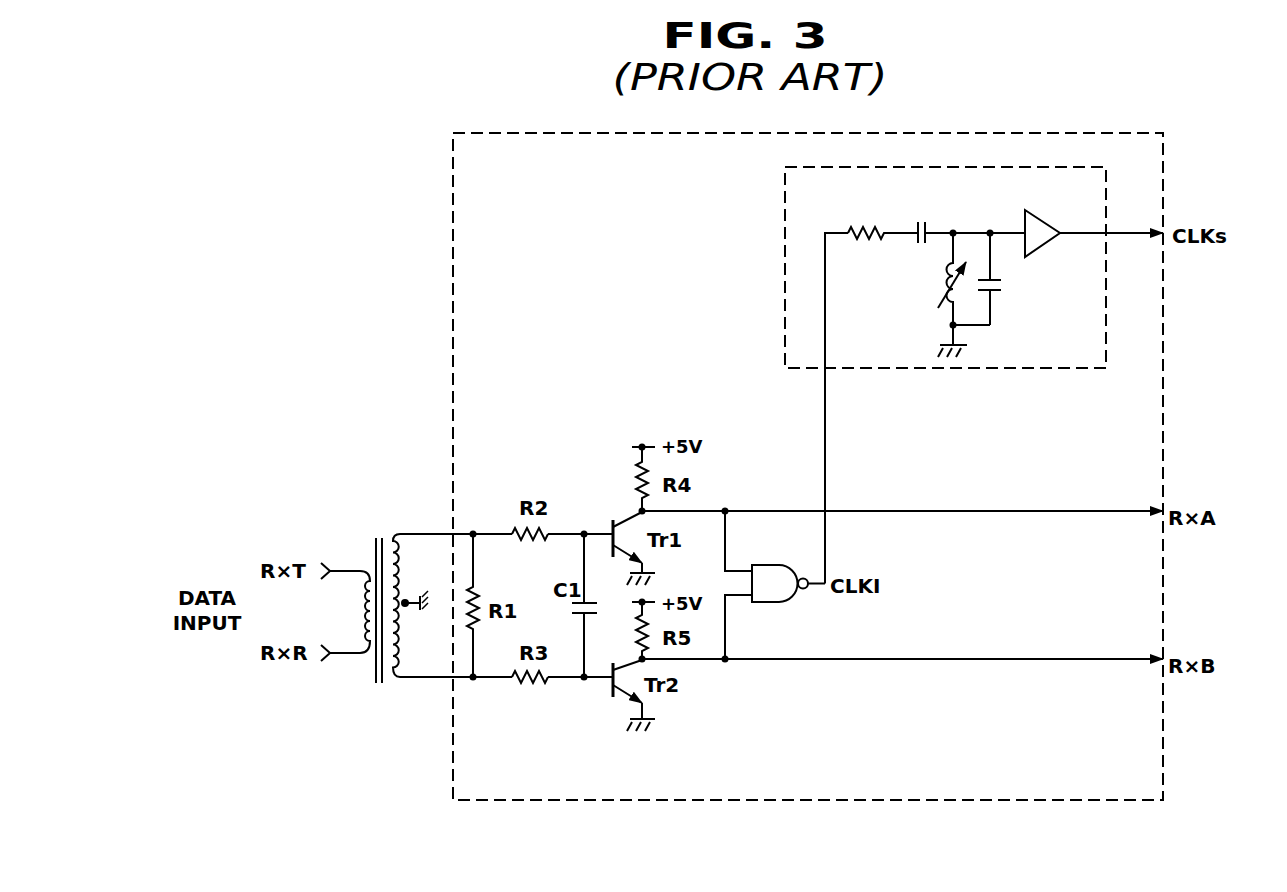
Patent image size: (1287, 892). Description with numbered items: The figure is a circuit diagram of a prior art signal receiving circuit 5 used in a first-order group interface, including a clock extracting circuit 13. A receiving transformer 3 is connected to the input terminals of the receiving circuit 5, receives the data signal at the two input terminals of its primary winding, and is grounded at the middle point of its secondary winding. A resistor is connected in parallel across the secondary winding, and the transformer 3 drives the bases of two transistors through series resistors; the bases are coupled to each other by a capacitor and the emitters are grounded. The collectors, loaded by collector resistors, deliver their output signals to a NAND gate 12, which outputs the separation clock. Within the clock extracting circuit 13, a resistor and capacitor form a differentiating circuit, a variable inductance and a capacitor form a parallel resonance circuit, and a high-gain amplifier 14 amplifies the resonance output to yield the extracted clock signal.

The receiving transformer 3 is at (380, 686).
The signal receiving circuit 5 is at (1166, 738).
The NAND gate 12 is at (777, 602).
The clock extracting circuit 13 is at (932, 307).
The high-gain amplifier 14 is at (1046, 216).